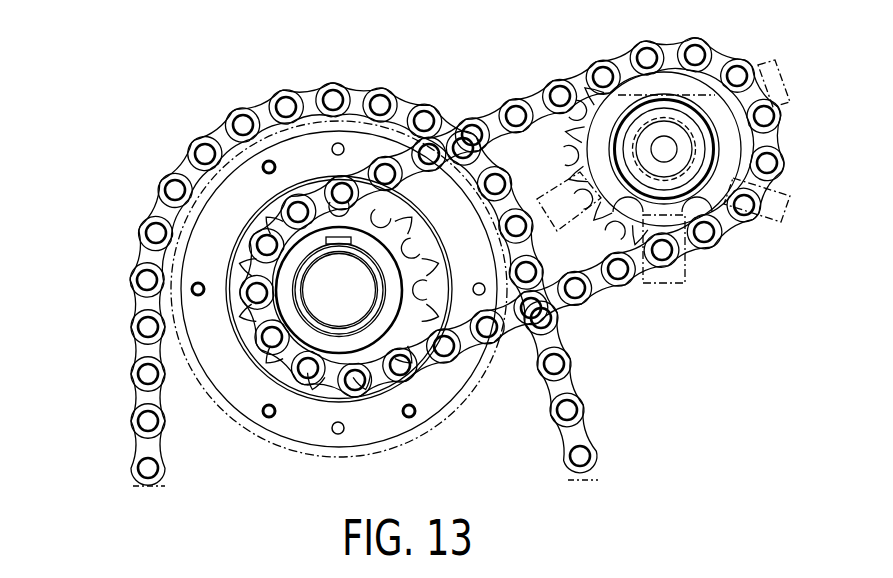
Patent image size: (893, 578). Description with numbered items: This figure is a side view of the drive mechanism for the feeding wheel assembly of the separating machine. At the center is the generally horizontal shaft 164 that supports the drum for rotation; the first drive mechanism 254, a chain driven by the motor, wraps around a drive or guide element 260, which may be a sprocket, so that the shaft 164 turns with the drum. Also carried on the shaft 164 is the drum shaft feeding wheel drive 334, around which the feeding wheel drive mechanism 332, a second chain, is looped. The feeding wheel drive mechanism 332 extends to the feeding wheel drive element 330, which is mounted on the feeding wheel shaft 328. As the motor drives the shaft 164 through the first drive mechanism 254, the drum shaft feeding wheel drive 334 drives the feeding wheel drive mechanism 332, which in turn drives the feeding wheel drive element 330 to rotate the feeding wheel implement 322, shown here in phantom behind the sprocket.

The horizontal shaft 164 is at (332, 288).
The first drive mechanism 254 is at (132, 400).
The drive or guide element 260 is at (233, 388).
The feeding wheel implement 322 is at (782, 220).
The feeding wheel shaft 328 is at (664, 149).
The feeding wheel drive element 330 is at (628, 238).
The feeding wheel drive mechanism 332 is at (465, 342).
The drum shaft feeding wheel drive 334 is at (407, 300).